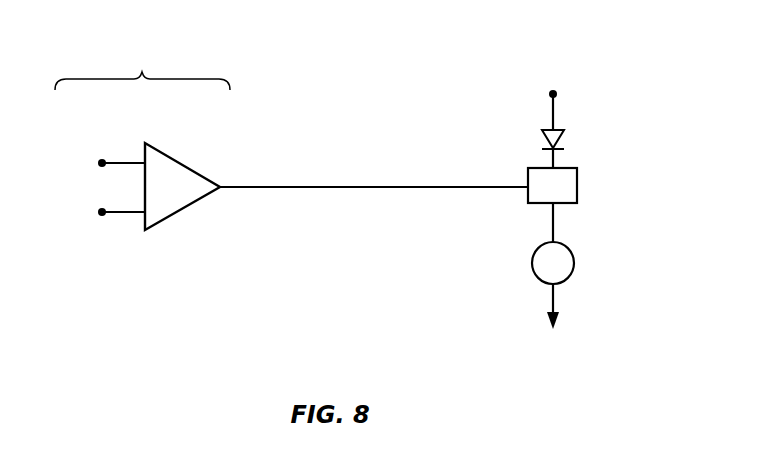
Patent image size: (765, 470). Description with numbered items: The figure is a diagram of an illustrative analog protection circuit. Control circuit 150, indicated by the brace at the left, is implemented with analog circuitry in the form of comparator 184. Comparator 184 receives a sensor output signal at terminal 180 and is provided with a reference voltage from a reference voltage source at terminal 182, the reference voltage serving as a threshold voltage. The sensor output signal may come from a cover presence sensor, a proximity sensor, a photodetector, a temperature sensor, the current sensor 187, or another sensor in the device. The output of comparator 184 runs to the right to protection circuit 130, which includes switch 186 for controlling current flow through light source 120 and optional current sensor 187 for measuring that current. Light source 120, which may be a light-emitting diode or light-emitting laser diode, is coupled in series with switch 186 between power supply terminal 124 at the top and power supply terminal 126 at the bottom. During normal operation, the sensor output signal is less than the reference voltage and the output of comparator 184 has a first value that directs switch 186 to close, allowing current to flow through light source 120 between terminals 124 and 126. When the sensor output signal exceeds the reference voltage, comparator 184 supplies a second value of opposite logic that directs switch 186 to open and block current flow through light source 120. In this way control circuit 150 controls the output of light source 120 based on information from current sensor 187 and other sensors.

The control circuit 150 is at (142, 69).
The terminal 180 is at (120, 161).
The terminal 182 is at (130, 214).
The comparator 184 is at (187, 184).
The protection circuit 130 is at (516, 278).
The power supply terminal 124 is at (559, 94).
The light source 120 is at (565, 139).
The switch 186 is at (577, 187).
The current sensor 187 is at (576, 262).
The power supply terminal 126 is at (559, 323).